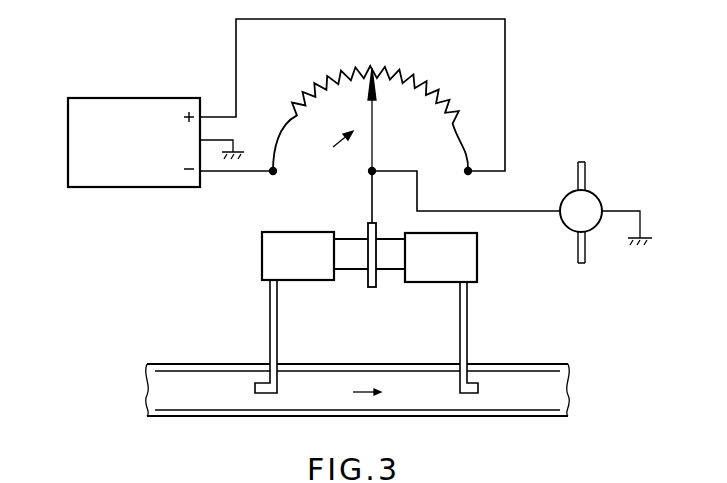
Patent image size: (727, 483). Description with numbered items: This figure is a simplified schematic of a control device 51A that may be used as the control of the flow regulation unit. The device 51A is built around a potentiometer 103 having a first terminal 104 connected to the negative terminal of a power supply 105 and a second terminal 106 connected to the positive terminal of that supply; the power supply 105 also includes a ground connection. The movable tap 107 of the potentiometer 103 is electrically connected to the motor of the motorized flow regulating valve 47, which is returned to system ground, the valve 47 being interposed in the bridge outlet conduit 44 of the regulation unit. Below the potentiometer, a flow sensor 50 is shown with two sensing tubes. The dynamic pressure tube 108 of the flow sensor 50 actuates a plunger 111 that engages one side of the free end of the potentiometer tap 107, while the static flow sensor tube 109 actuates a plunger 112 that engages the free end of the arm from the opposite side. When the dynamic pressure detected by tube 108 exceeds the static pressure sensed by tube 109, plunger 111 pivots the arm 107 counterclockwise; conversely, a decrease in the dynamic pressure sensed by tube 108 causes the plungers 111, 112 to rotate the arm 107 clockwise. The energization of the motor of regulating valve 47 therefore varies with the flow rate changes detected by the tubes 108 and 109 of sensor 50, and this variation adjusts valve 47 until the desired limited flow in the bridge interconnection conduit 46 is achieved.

The power supply 105 is at (130, 187).
The first terminal 104 is at (273, 171).
The second terminal 106 is at (468, 176).
The device 51A is at (470, 95).
The movable tap 107 is at (372, 148).
The potentiometer 103 is at (325, 151).
The flow sensor 50 is at (390, 337).
The plunger 111 is at (352, 252).
The plunger 112 is at (389, 248).
The dynamic pressure tube 108 is at (274, 320).
The static flow sensor tube 109 is at (467, 325).
The bridge interconnection conduit 46 is at (440, 417).
The bridge outlet conduit 44 is at (585, 181).
The flow regulating valve 47 is at (601, 203).